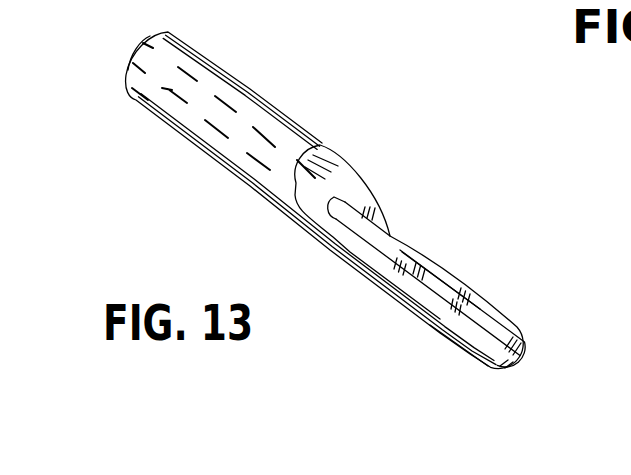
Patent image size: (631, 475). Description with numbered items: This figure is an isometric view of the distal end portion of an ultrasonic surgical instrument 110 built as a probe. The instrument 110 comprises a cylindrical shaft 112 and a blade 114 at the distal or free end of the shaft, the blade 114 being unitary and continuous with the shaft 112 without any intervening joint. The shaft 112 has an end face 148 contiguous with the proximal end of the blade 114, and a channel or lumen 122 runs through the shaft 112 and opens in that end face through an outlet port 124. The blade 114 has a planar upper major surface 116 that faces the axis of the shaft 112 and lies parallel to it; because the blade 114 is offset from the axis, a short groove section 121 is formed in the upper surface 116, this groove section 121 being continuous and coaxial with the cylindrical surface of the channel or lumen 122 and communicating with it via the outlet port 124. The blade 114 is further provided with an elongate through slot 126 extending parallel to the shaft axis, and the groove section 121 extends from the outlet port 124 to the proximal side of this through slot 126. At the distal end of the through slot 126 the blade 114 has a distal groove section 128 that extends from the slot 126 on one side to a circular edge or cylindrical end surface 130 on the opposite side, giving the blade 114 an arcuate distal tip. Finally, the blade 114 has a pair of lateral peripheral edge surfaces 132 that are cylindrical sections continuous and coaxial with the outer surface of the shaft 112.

The surgical instrument 110 is at (215, 209).
The cylindrical shaft 112 is at (177, 43).
The blade 114 is at (385, 354).
The planar upper major surface 116 is at (441, 268).
The short groove section 121 is at (388, 232).
The channel or lumen 122 is at (132, 105).
The outlet port 124 is at (341, 199).
The elongate through slot 126 is at (406, 302).
The distal groove section 128 is at (530, 358).
The circular edge or cylindrical end surface 130 is at (493, 372).
The lateral peripheral edge surfaces 132 is at (470, 358).
The end face 148 is at (343, 158).